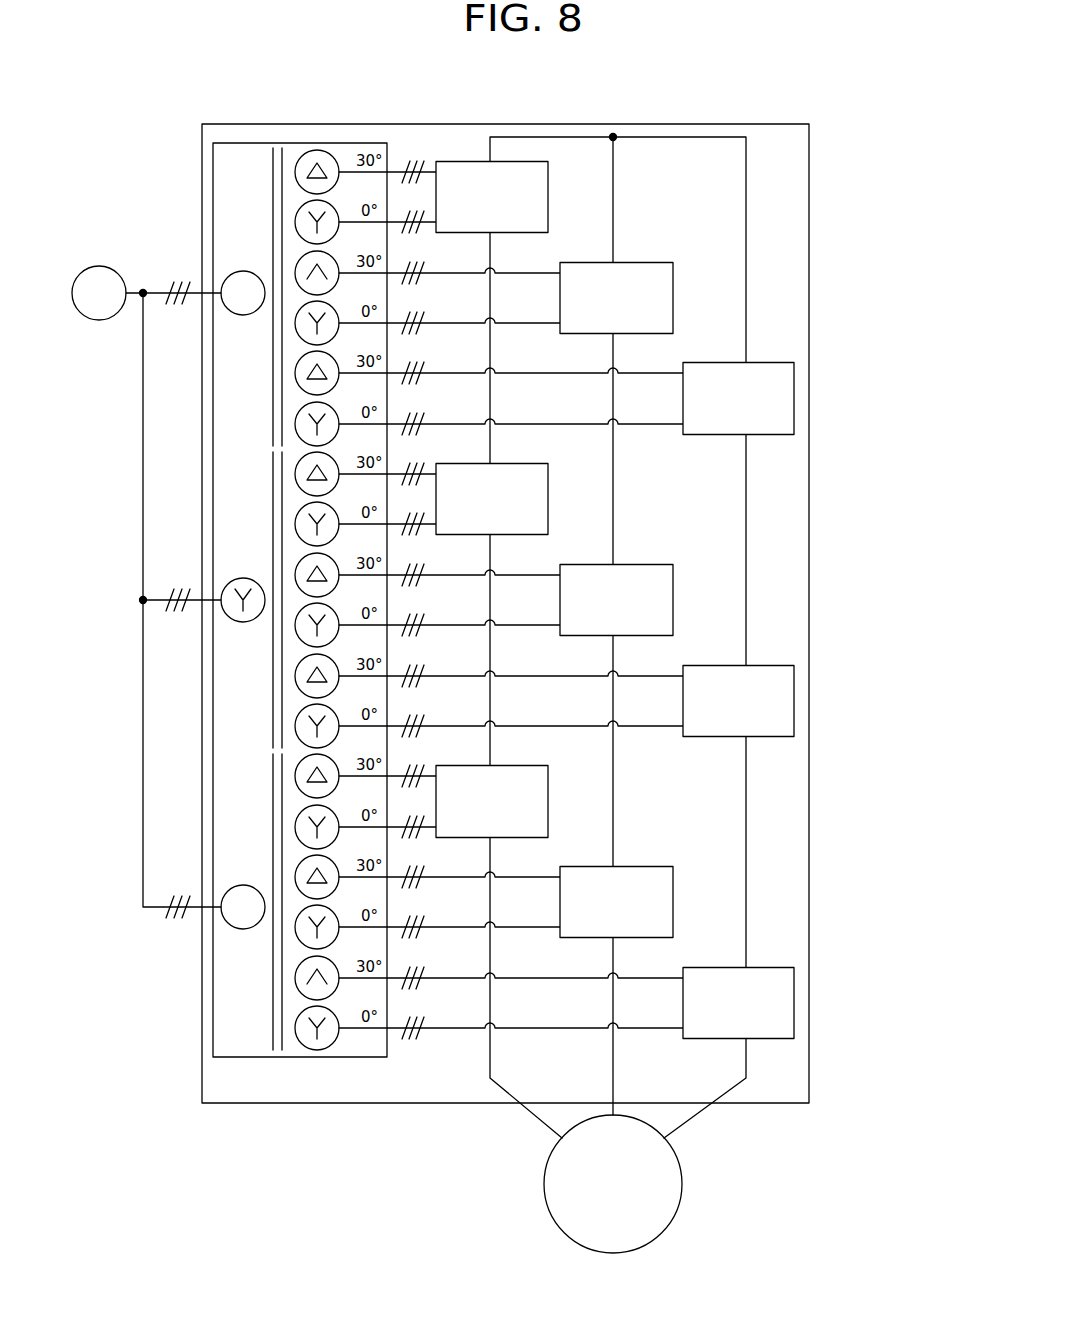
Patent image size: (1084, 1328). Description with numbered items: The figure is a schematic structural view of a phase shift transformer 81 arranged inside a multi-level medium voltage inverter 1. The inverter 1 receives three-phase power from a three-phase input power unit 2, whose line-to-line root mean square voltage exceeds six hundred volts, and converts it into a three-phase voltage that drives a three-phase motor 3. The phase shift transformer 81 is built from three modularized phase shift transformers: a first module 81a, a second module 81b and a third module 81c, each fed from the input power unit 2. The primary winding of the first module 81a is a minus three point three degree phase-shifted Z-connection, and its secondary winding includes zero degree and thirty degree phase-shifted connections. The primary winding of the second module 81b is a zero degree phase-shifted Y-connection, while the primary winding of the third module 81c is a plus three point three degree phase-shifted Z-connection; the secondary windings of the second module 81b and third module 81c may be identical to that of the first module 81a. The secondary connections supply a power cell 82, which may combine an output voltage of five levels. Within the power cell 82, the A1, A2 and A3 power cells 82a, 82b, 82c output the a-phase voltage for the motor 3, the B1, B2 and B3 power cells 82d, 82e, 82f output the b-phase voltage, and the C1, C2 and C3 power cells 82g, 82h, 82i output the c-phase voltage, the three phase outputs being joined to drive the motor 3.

The multi-level medium voltage inverter 1 is at (513, 124).
The 3-phase input power unit 2 is at (99, 266).
The 3-phase motor 3 is at (683, 1181).
The phase shift transformer 81 is at (277, 143).
The first module 81a is at (252, 203).
The second module 81b is at (252, 538).
The third module 81c is at (252, 795).
The power cell 82 is at (845, 160).
The A1 power cell 82a is at (548, 195).
The A2 power cell 82b is at (548, 497).
The A3 power cell 82c is at (548, 800).
The B1 power cell 82d is at (673, 298).
The B2 power cell 82e is at (673, 600).
The B3 power cell 82f is at (673, 902).
The C1 power cell 82g is at (794, 397).
The C2 power cell 82h is at (794, 700).
The C3 power cell 82i is at (794, 1002).